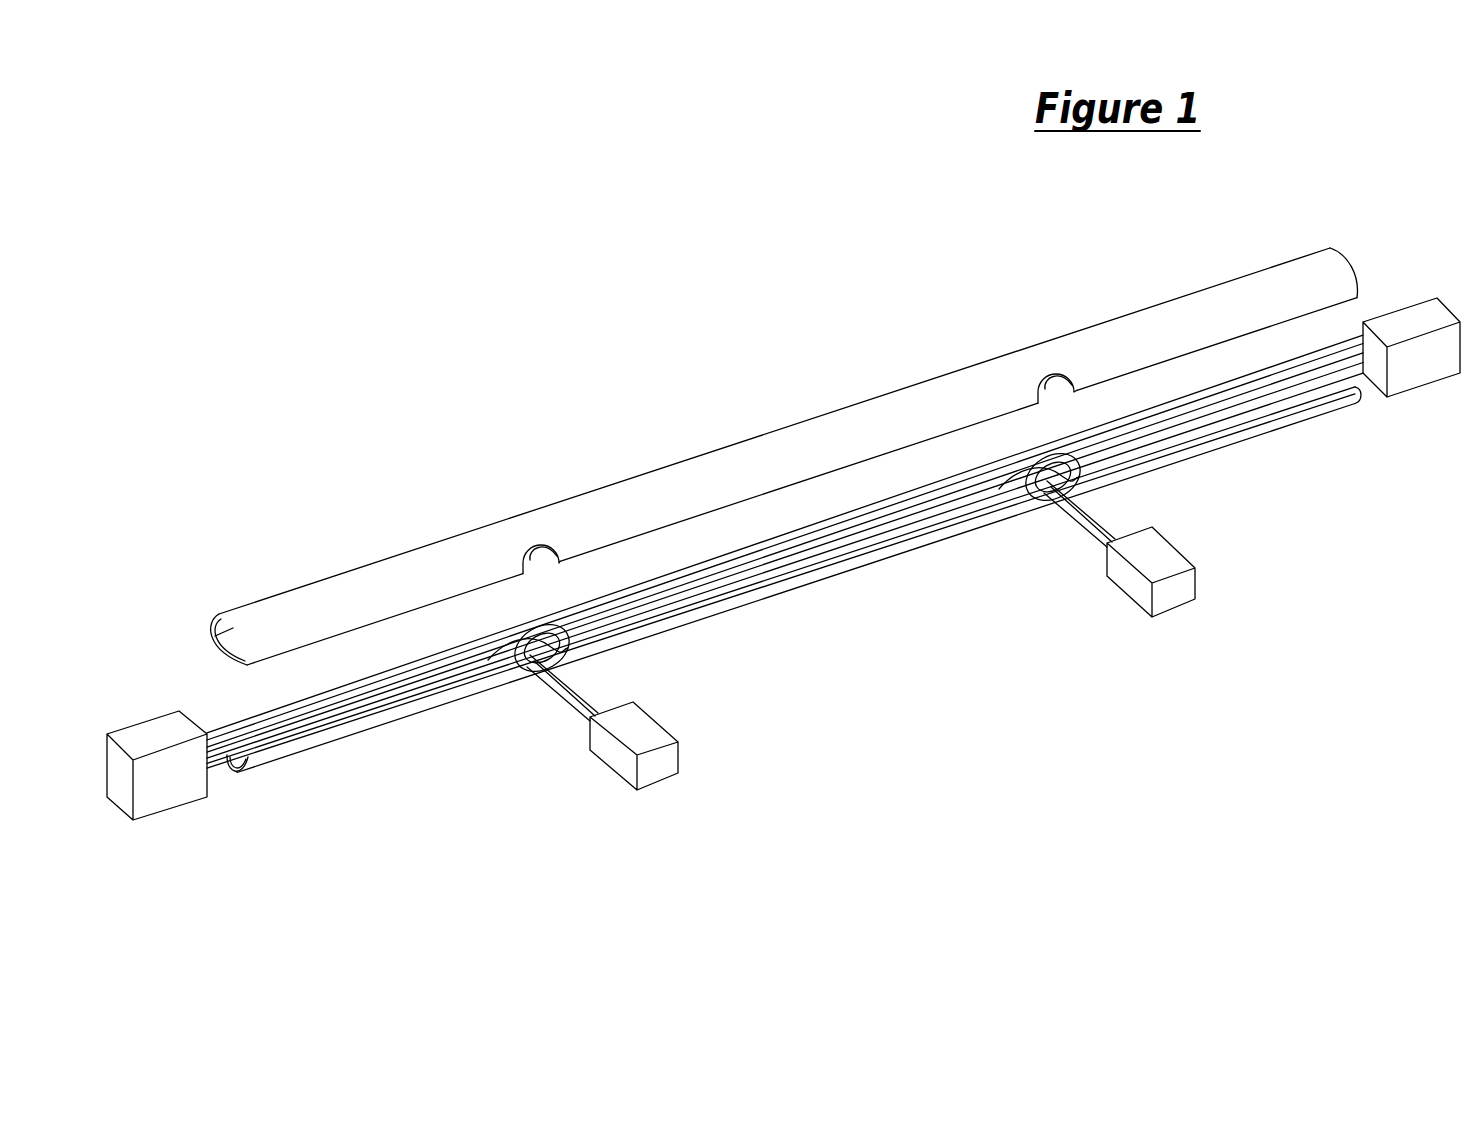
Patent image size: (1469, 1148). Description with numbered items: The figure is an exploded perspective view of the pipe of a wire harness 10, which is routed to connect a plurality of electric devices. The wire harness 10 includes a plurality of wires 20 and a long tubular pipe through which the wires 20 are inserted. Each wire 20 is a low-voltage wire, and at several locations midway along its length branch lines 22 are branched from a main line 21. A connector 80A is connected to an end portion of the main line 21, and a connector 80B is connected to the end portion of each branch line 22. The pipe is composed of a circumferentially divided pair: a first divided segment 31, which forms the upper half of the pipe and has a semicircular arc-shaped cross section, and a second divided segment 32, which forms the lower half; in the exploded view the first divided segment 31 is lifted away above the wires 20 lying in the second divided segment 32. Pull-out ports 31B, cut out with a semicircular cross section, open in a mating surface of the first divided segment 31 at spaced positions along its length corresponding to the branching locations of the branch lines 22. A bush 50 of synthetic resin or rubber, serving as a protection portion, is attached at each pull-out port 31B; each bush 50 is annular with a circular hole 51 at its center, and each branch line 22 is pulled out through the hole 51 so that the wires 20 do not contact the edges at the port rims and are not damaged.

The wire harness 10 is at (762, 290).
The wires 20 is at (1345, 347).
The main line 21 is at (1220, 410).
The branch lines 22 is at (585, 690).
The first divided segment 31 is at (848, 422).
The pull-out ports 31B is at (1056, 374).
The second divided segment 32 is at (848, 568).
The bush 50 is at (527, 673).
The hole 51 is at (503, 649).
The connector 80A is at (1455, 312).
The connectors 80B is at (680, 754).